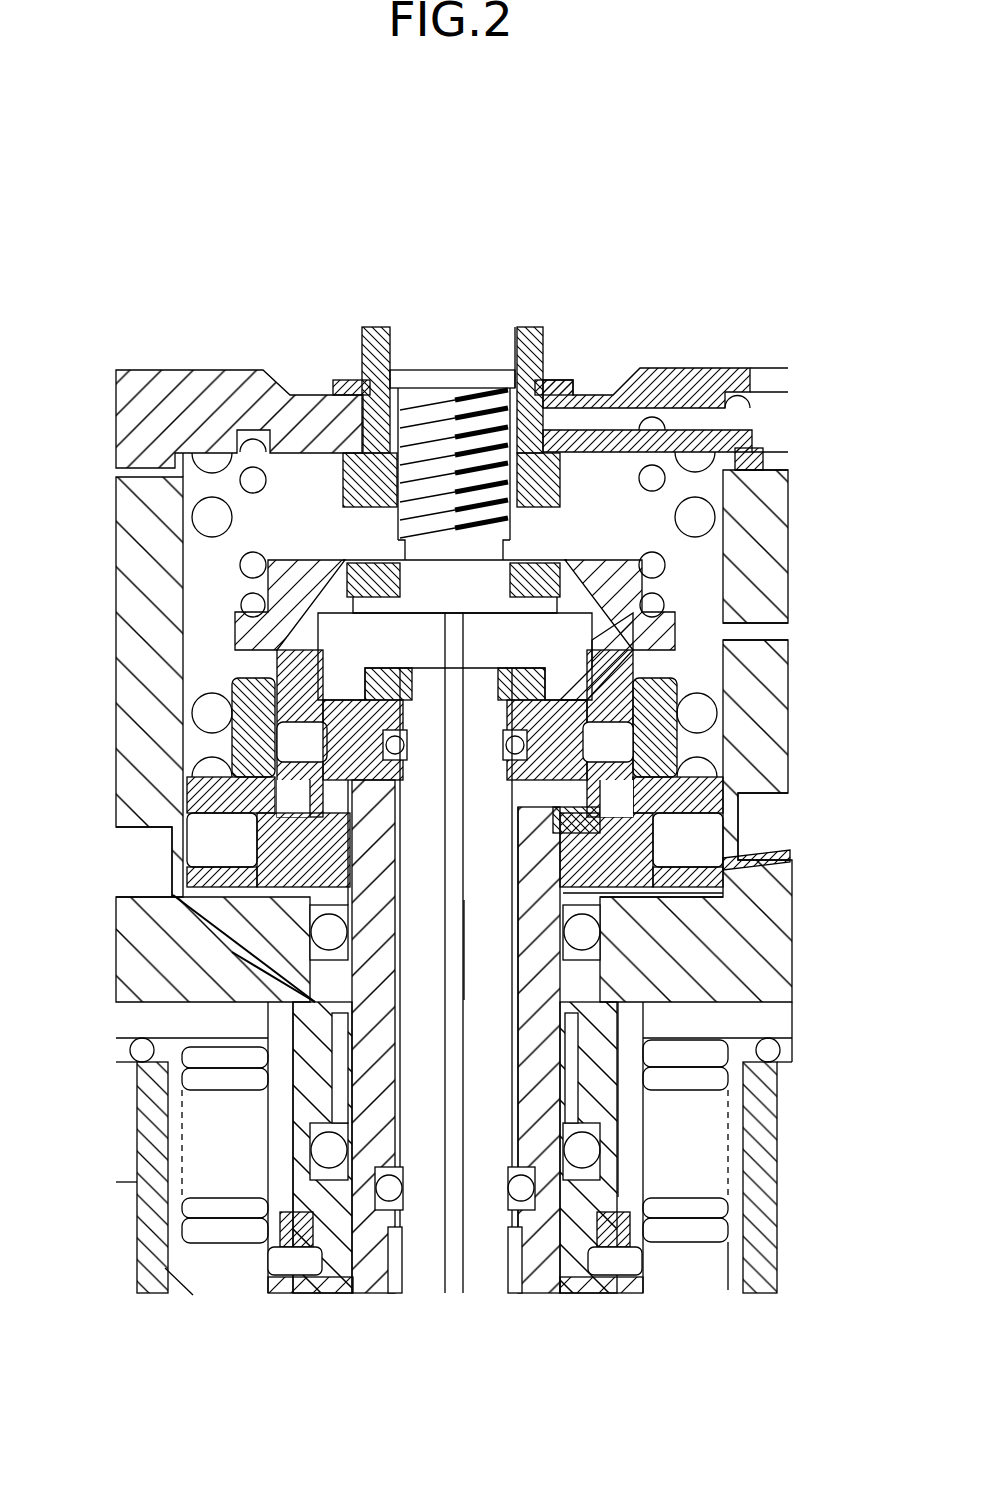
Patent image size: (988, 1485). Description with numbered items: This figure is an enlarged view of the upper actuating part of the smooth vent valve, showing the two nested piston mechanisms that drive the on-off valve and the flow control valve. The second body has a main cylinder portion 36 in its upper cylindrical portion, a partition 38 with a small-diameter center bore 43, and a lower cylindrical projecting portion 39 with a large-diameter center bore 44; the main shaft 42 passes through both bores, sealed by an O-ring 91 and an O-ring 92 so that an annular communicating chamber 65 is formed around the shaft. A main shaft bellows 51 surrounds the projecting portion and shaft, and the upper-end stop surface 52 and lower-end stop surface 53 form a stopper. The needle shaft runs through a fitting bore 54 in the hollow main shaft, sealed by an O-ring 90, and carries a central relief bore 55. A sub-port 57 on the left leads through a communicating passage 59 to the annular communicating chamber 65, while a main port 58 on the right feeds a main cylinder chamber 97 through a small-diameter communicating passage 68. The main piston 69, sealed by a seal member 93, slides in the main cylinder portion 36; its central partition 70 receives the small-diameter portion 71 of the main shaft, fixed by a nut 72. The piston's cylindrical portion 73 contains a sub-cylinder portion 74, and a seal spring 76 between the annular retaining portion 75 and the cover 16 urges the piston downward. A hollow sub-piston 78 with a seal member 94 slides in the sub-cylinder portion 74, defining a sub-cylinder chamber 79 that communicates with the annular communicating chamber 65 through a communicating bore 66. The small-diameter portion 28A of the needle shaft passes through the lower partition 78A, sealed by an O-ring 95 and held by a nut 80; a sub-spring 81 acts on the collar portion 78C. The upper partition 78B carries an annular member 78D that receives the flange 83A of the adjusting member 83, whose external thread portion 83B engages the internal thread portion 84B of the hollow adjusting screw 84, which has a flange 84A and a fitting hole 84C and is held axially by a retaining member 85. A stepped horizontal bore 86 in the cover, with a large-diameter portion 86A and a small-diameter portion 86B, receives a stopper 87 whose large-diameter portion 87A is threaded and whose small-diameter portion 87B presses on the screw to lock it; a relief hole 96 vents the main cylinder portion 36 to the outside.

The cover 16 is at (160, 390).
The small-diameter portion of the needle shaft 28A is at (438, 690).
The main cylinder portion 36 is at (190, 610).
The partition 38 is at (150, 935).
The cylindrical projecting portion 39 is at (630, 1130).
The main shaft 42 is at (545, 1087).
The small-diameter center bore 43 is at (680, 985).
The large-diameter center bore 44 is at (522, 1020).
The main shaft bellows 51 is at (180, 1245).
The upper-end stop surface 52 is at (610, 1220).
The lower-end stop surface 53 is at (290, 1222).
The fitting bore 54 is at (485, 952).
The relief bore 55 is at (375, 1012).
The sub-port 57 is at (175, 855).
The main port 58 is at (755, 835).
The communicating passage 59 is at (265, 958).
The annular communicating chamber 65 is at (330, 1135).
The communicating bore 66 is at (340, 1045).
The small-diameter communicating passage 68 is at (760, 862).
The main piston 69 is at (655, 760).
The central partition 70 is at (650, 895).
The small-diameter portion of the main shaft 71 is at (380, 878).
The nut 72 is at (567, 814).
The cylindrical portion 73 is at (655, 690).
The sub-cylinder portion 74 is at (283, 820).
The annular retaining portion 75 is at (690, 790).
The seal spring 76 is at (705, 520).
The sub-piston 78 is at (715, 725).
The lower partition 78A is at (548, 705).
The upper partition 78B is at (565, 580).
The collar portion 78C is at (625, 610).
The annular member 78D is at (365, 565).
The sub-cylinder chamber 79 is at (240, 740).
The nut 80 is at (385, 670).
The sub-spring 81 is at (255, 585).
The adjusting member 83 is at (454, 348).
The flange 83A is at (512, 668).
The external thread portion 83B is at (452, 400).
The hollow adjusting screw 84 is at (522, 345).
The flange 84A is at (372, 480).
The internal thread portion 84B is at (478, 430).
The fitting hole 84C is at (500, 345).
The retaining member 85 is at (348, 382).
The horizontal bore 86 is at (712, 400).
The large-diameter portion of the horizontal bore 86A is at (738, 395).
The small-diameter portion of the horizontal bore 86B is at (575, 400).
The stopper 87 is at (647, 358).
The large-diameter portion of the stopper 87A is at (780, 398).
The small-diameter portion of the stopper 87B is at (657, 420).
The O-ring 90 is at (520, 1195).
The O-ring 91 is at (335, 1150).
The O-ring 92 is at (335, 935).
The seal member 93 is at (210, 855).
The seal member 94 is at (300, 730).
The O-ring 95 is at (410, 750).
The relief hole 96 is at (790, 632).
The main cylinder chamber 97 is at (700, 880).